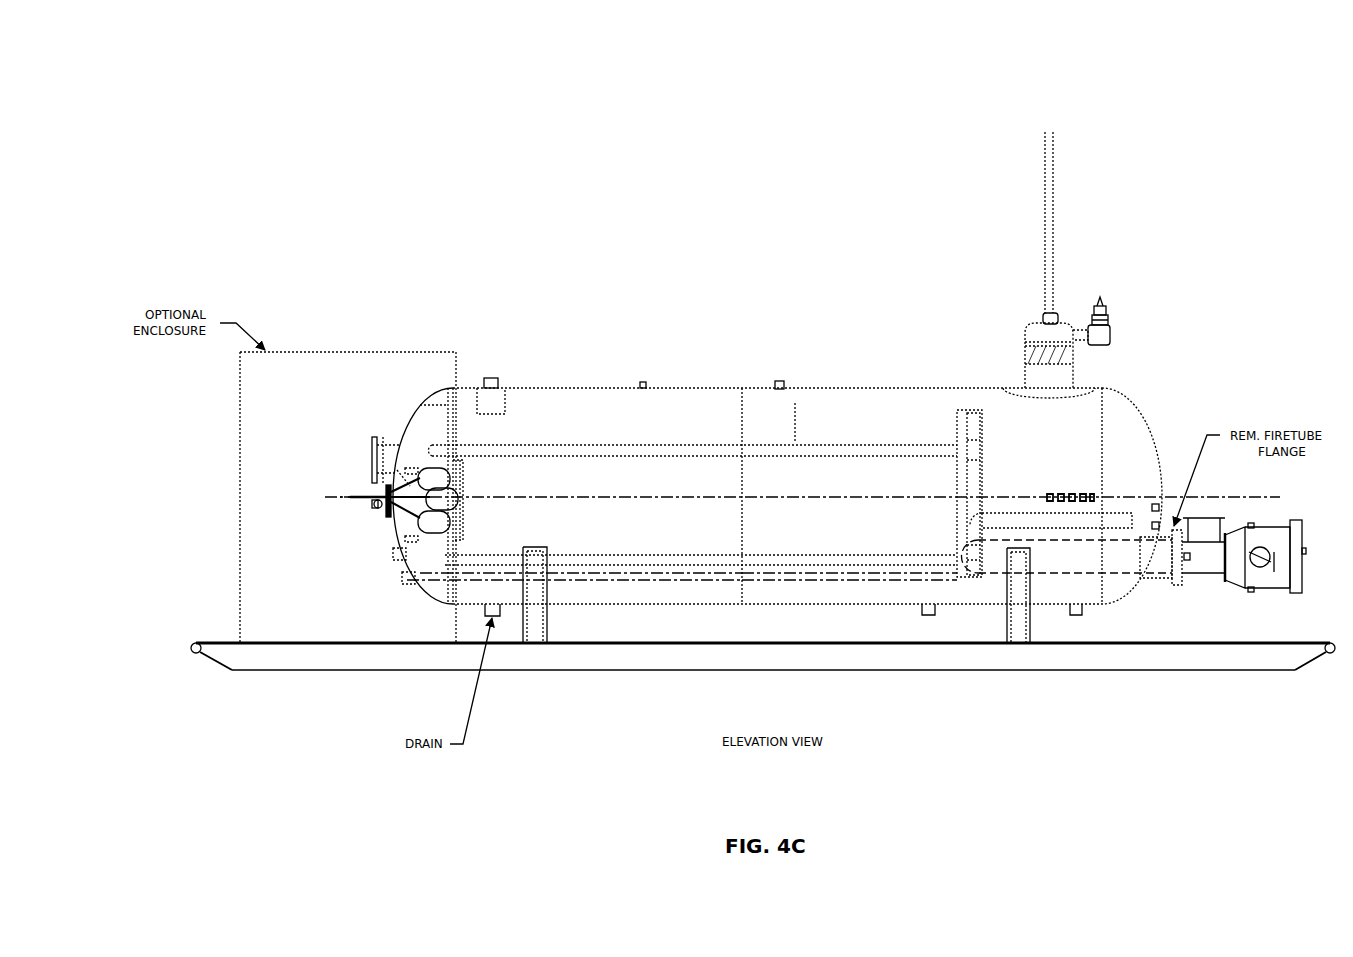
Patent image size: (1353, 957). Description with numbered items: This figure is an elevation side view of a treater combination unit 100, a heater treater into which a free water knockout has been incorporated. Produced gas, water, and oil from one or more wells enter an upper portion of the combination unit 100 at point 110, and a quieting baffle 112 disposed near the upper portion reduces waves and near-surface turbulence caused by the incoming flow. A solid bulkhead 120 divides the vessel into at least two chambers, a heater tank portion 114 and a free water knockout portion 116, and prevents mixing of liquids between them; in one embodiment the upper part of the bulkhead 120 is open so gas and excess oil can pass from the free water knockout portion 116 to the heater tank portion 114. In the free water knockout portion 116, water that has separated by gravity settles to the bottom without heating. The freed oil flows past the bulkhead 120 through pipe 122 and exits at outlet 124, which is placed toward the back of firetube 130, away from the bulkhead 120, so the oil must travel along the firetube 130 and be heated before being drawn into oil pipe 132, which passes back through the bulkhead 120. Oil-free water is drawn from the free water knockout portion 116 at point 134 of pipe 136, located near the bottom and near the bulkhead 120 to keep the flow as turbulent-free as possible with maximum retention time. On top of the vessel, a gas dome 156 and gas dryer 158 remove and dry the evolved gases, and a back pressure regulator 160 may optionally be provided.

The treater combination unit 100 is at (543, 207).
The point 110 is at (488, 378).
The quieting baffle 112 is at (795, 418).
The heater tank portion 114 is at (1138, 399).
The free water knockout portion 116 is at (624, 385).
The bulkhead 120 is at (957, 428).
The pipe 122 is at (968, 412).
The outlet 124 is at (1122, 522).
The firetube 130 is at (1062, 558).
The oil pipe 132 is at (943, 558).
The point 134 is at (940, 578).
The pipe 136 is at (610, 576).
The gas dome 156 is at (1060, 322).
The gas dryer 158 is at (1053, 216).
The back pressure regulator 160 is at (1112, 333).